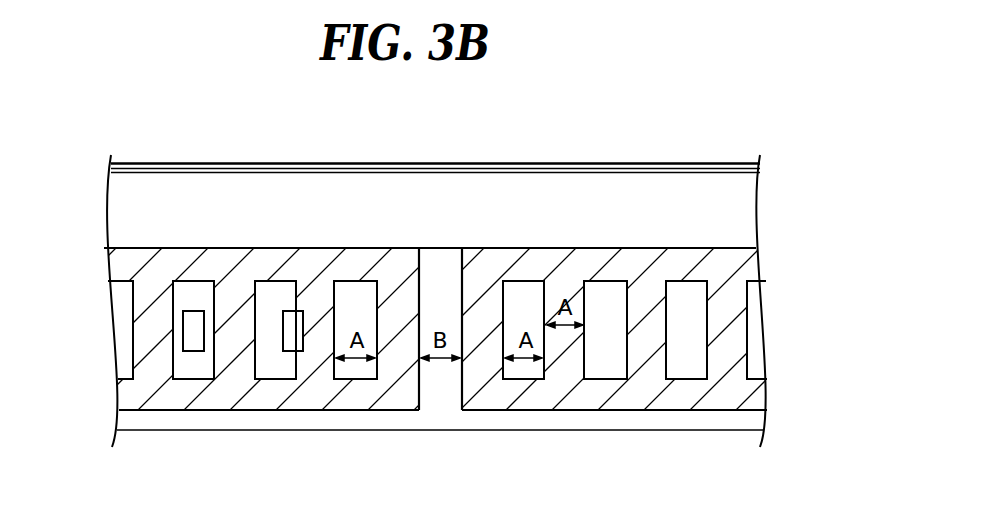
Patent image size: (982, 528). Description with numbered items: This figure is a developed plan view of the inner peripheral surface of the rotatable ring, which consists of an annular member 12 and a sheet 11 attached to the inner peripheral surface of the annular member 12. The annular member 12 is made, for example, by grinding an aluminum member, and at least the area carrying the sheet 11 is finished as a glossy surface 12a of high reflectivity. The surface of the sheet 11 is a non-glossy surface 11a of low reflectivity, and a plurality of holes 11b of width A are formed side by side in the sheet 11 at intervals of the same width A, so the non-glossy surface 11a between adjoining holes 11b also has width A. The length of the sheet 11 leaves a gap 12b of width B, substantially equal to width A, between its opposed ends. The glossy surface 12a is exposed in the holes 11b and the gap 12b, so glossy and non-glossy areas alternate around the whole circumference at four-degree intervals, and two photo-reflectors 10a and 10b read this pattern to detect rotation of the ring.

The photo-reflector 10a is at (197, 325).
The photo-reflector 10b is at (290, 315).
The sheet 11 is at (517, 248).
The non-glossy surface 11a is at (313, 360).
The holes 11b is at (255, 358).
The annular member 12 is at (659, 187).
The glossy surface 12a is at (357, 292).
The gap 12b is at (418, 243).